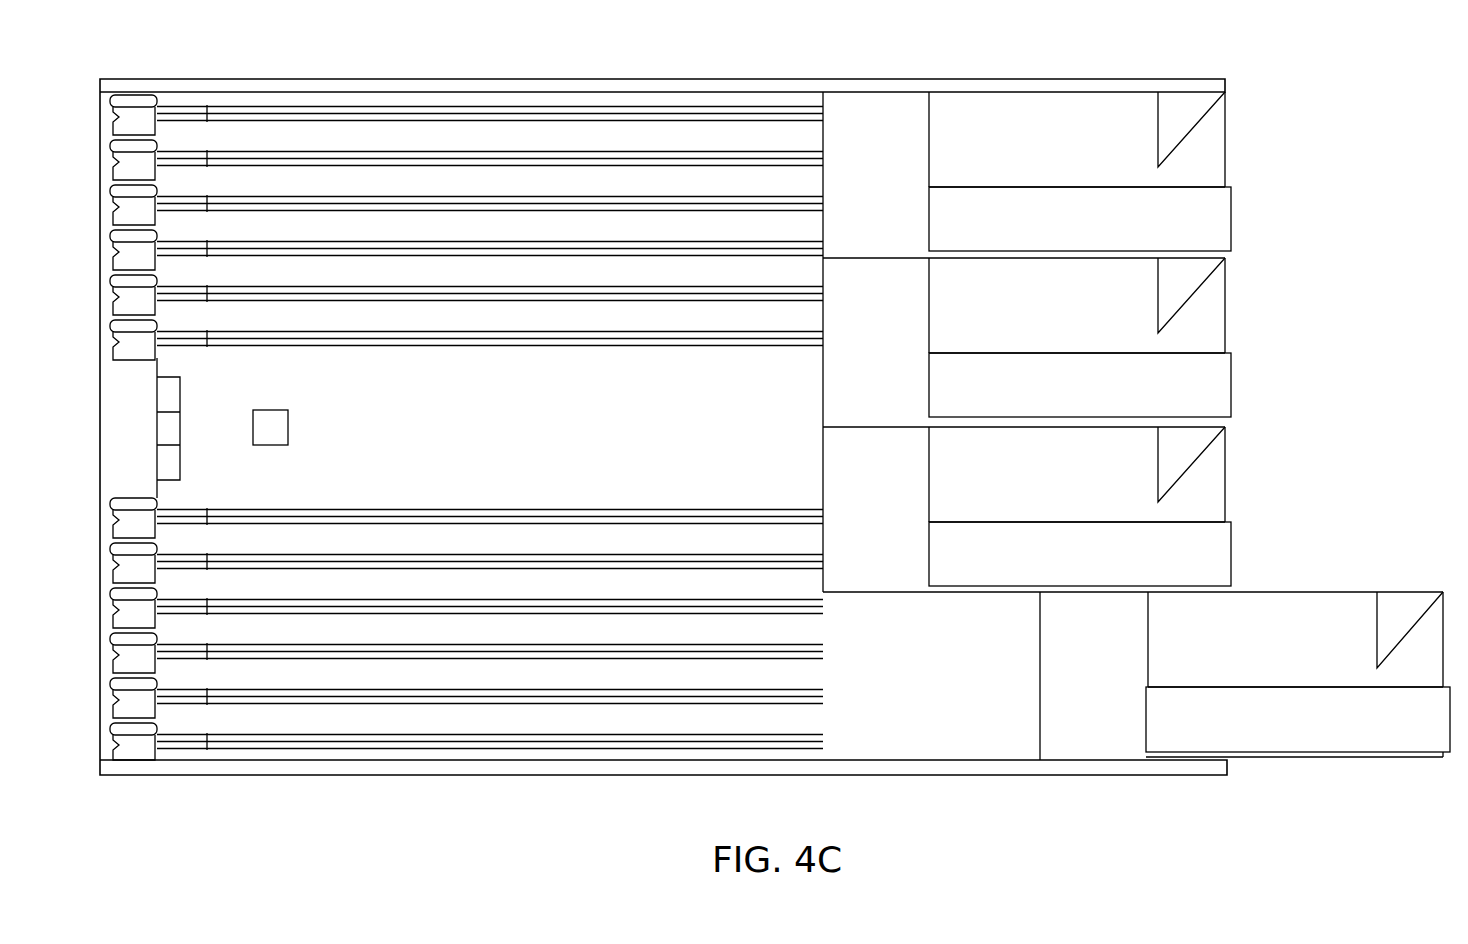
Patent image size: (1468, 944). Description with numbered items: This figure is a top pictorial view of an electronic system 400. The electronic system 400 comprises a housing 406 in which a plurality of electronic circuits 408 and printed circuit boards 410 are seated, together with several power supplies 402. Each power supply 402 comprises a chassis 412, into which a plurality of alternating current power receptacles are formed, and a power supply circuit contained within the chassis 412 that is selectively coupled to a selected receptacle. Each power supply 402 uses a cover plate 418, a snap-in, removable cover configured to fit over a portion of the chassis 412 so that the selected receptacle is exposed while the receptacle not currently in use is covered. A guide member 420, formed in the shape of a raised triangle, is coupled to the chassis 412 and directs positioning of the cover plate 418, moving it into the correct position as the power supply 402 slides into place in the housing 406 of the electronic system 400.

The electronic system 400 is at (1318, 101).
The power supply 402 is at (1215, 142).
The housing 406 is at (842, 77).
The electronic circuits 408 is at (180, 403).
The printed circuit boards 410 is at (495, 112).
The chassis 412 is at (1003, 105).
The cover plate 418 is at (1231, 230).
The guide member 420 is at (1185, 105).